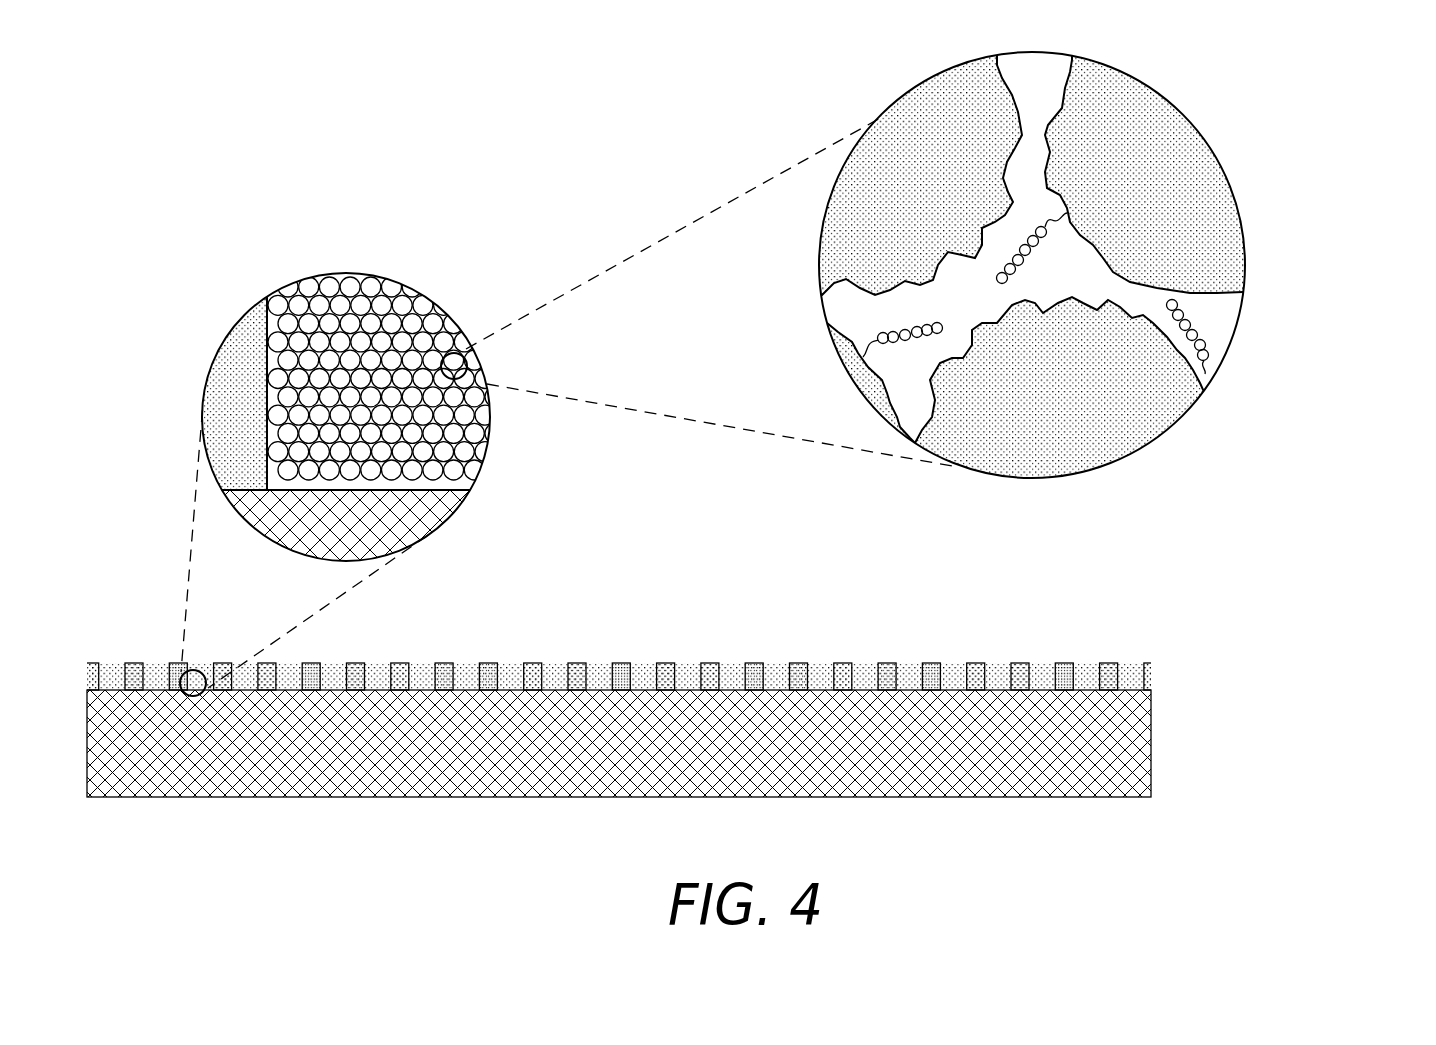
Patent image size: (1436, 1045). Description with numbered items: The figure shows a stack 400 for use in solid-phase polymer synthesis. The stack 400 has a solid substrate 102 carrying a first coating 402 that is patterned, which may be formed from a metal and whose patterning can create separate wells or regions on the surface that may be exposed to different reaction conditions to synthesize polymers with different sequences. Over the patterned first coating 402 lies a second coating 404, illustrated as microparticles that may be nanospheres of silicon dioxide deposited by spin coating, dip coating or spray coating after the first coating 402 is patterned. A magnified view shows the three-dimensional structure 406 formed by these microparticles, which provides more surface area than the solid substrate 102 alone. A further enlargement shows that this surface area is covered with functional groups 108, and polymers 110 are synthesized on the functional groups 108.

The stack 400 is at (146, 83).
The solid substrate 102 is at (702, 743).
The first coating 402 is at (695, 676).
The second coating 404 is at (1221, 87).
The three-dimensional structure 406 is at (477, 515).
The polymers 110 is at (1215, 316).
The functional groups 108 is at (1207, 372).